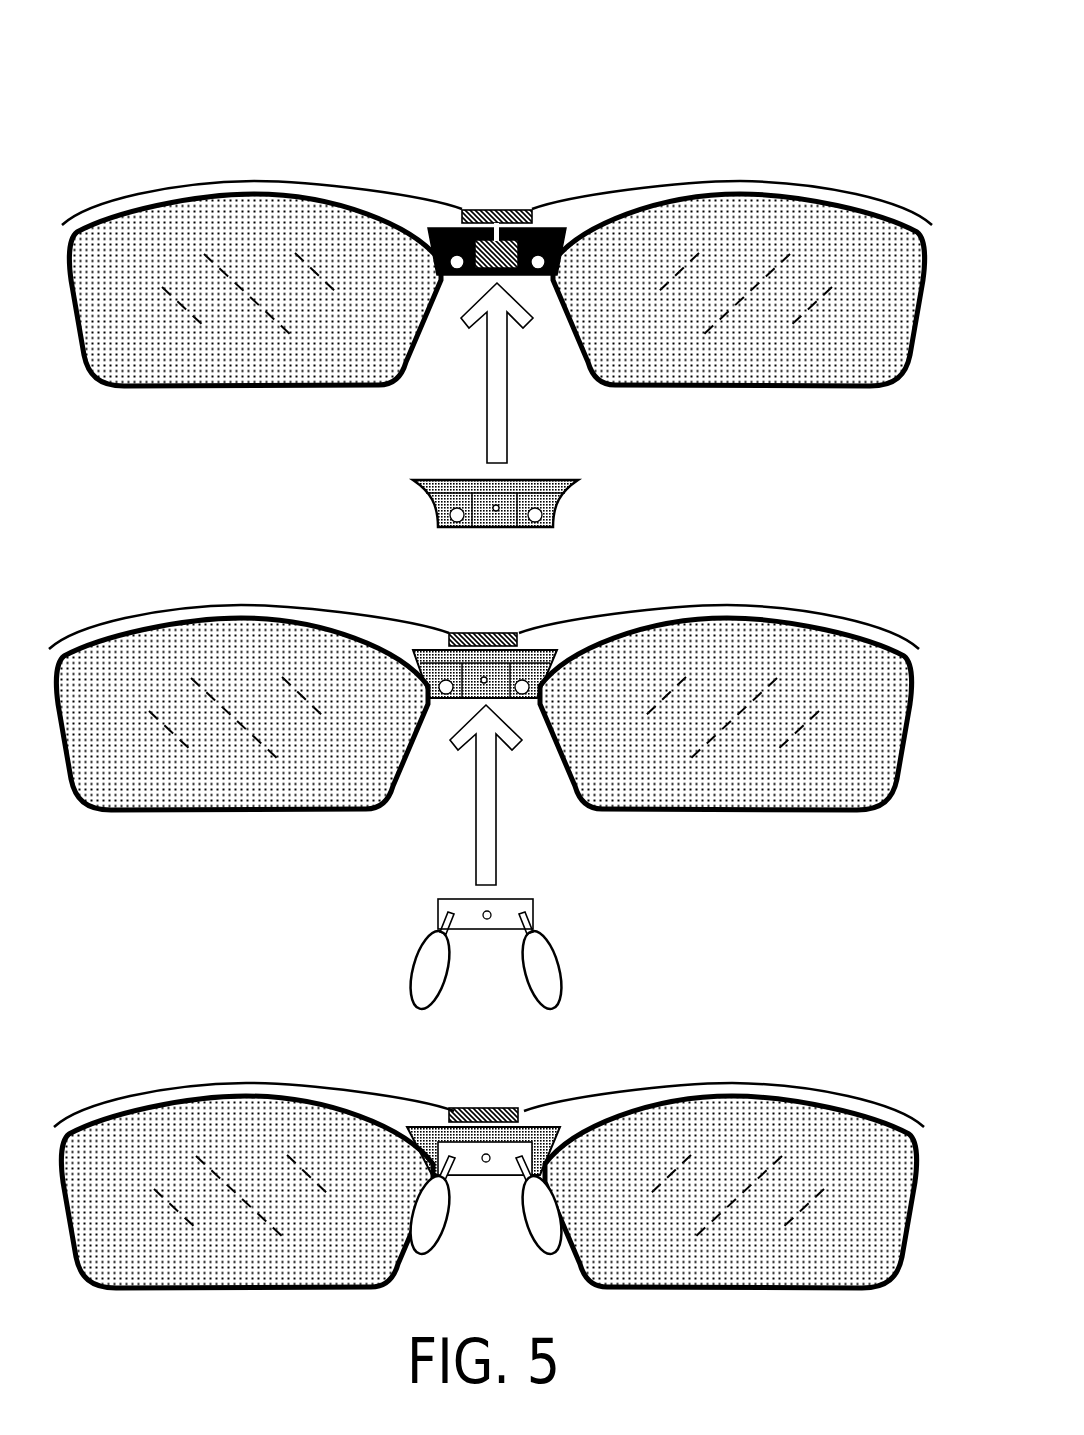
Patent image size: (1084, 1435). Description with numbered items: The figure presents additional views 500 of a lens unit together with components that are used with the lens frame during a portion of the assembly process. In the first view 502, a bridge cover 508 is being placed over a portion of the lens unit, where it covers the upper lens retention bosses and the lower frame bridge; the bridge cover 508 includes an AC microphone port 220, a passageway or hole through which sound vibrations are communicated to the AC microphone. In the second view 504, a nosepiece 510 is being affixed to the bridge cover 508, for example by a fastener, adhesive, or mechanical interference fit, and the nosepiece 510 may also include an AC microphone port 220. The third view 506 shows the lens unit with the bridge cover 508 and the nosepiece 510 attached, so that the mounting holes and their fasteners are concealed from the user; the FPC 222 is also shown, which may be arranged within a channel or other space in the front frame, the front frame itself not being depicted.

The additional views 500 is at (488, 646).
The first view 502 is at (497, 312).
The second view 504 is at (482, 765).
The third view 506 is at (489, 1124).
The AC microphone port 220 is at (498, 505).
The bridge cover 508 is at (553, 510).
The nosepiece 510 is at (533, 913).
The FPC 222 is at (566, 1090).